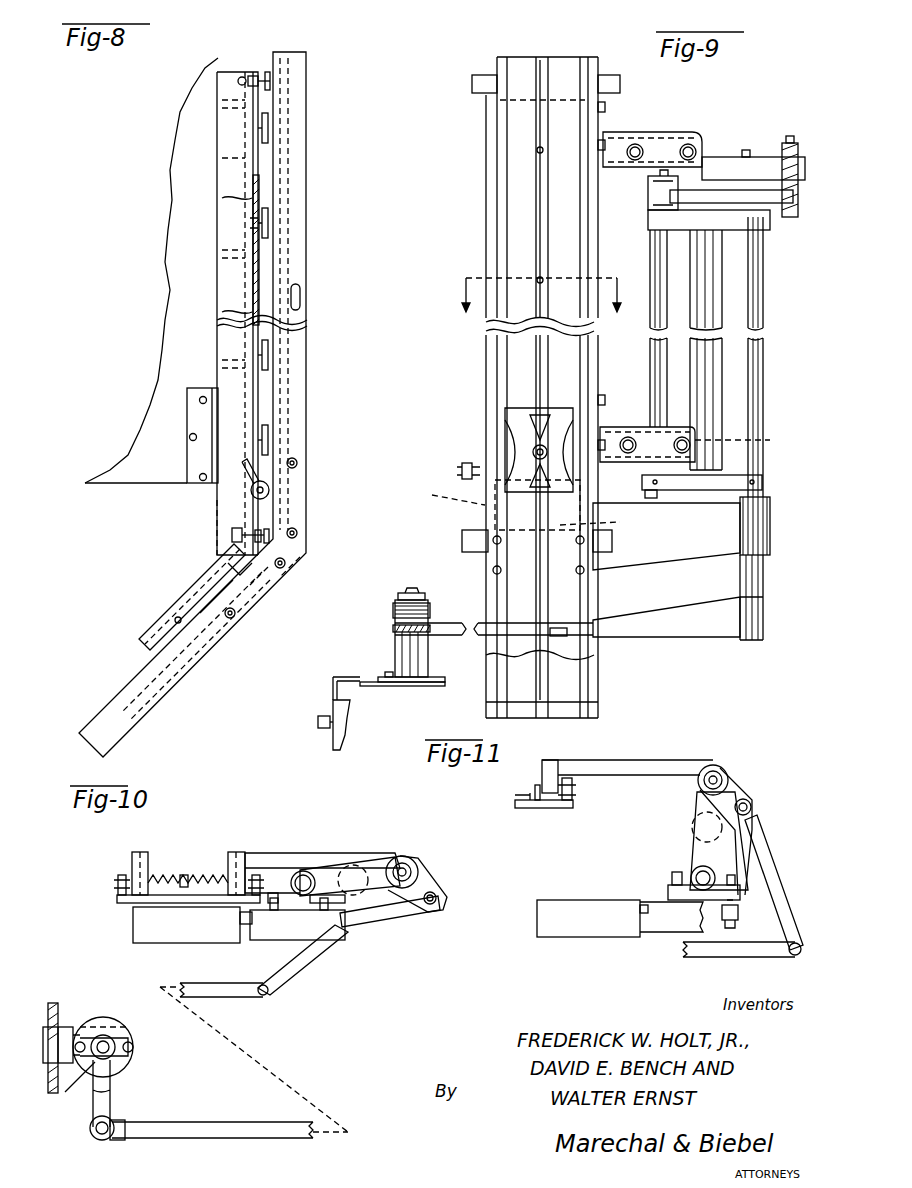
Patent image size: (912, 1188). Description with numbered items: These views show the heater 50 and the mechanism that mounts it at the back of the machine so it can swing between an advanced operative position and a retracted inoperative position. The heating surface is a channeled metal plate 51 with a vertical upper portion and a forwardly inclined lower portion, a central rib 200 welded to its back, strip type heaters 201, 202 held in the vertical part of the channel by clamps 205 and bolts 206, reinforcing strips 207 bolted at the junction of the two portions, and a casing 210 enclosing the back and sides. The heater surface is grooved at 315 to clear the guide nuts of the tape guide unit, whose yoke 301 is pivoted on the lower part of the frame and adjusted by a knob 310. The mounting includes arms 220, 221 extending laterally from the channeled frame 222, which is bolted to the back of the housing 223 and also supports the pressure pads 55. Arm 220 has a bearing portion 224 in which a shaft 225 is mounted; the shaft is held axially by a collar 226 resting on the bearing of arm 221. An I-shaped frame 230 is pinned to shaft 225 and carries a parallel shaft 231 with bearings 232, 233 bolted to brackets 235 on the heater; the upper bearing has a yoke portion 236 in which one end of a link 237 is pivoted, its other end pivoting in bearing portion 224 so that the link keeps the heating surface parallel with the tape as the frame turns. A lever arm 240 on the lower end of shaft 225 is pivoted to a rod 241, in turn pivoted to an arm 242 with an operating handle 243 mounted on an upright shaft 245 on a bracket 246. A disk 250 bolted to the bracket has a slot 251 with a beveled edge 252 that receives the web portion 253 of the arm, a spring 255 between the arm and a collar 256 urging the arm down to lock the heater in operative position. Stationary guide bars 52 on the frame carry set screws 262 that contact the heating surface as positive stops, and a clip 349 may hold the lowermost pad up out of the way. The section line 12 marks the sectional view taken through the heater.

In FIG. 9, the section line 12- 12 is at (543, 310).
In FIG. 8, the heater 50 is at (312, 170).
In FIG. 9, the heater 50 is at (520, 200).
In FIG. 10, the heater 50 is at (138, 930).
In FIG. 11, the heater 50 is at (568, 930).
In FIG. 8, the metal plate 51 is at (268, 275).
In FIG. 8, the stationary guide bars 52 is at (266, 74).
In FIG. 9, the stationary guide bars 52 is at (482, 76).
In FIG. 10, the stationary guide bars 52 is at (120, 902).
In FIG. 11, the stationary guide bars 52 is at (568, 810).
In FIG. 8, the pressure pads 55 is at (270, 132).
In FIG. 9, the central rib 200 is at (548, 57).
In FIG. 9, the strip type heater 201 is at (510, 230).
In FIG. 9, the strip type heater 202 is at (560, 263).
In FIG. 9, the clamps 205 is at (520, 412).
In FIG. 9, the bolts 206 is at (534, 450).
In FIG. 8, the reinforcing strips 207 is at (262, 588).
In FIG. 9, the reinforcing strips 207 is at (500, 598).
In FIG. 8, the casing 210 is at (298, 70).
In FIG. 9, the arm 220 is at (725, 157).
In FIG. 10, the arm 220 is at (268, 853).
In FIG. 11, the arm 220 is at (640, 760).
In FIG. 9, the arm 221 is at (735, 545).
In FIG. 8, the channeled frame 222 is at (228, 130).
In FIG. 10, the channeled frame 222 is at (132, 856).
In FIG. 11, the channeled frame 222 is at (548, 760).
In FIG. 8, the housing 223 is at (172, 182).
In FIG. 9, the bearing portion 224 is at (775, 158).
In FIG. 10, the bearing portion 224 is at (428, 880).
In FIG. 11, the bearing portion 224 is at (742, 795).
In FIG. 9, the shaft 225 is at (763, 350).
In FIG. 10, the shaft 225 is at (410, 862).
In FIG. 11, the shaft 225 is at (713, 770).
In FIG. 9, the collar 226 is at (765, 490).
In FIG. 9, the I-shaped frame 230 is at (715, 310).
In FIG. 10, the I-shaped frame 230 is at (350, 862).
In FIG. 11, the I-shaped frame 230 is at (697, 803).
In FIG. 9, the shaft 231 is at (655, 292).
In FIG. 11, the shaft 231 is at (700, 865).
In FIG. 9, the upper bearing 232 is at (665, 175).
In FIG. 10, the upper bearing 232 is at (300, 872).
In FIG. 11, the upper bearing 232 is at (668, 890).
In FIG. 9, the bearing 233 is at (773, 430).
In FIG. 9, the brackets 235 is at (618, 137).
In FIG. 10, the brackets 235 is at (298, 930).
In FIG. 11, the brackets 235 is at (660, 932).
In FIG. 9, the yoke portion 236 is at (672, 212).
In FIG. 11, the yoke portion 236 is at (740, 905).
In FIG. 9, the link 237 is at (730, 200).
In FIG. 10, the link 237 is at (400, 912).
In FIG. 11, the link 237 is at (755, 828).
In FIG. 9, the lever arm 240 is at (680, 628).
In FIG. 10, the lever arm 240 is at (300, 975).
In FIG. 11, the lever arm 240 is at (780, 935).
In FIG. 9, the rod 241 is at (458, 622).
In FIG. 10, the rod 241 is at (248, 998).
In FIG. 11, the rod 241 is at (712, 955).
In FIG. 9, the arm 242 is at (393, 628).
In FIG. 10, the arm 242 is at (110, 1108).
In FIG. 10, the operating handle 243 is at (110, 1132).
In FIG. 9, the upright shaft 245 is at (408, 590).
In FIG. 10, the upright shaft 245 is at (116, 1045).
In FIG. 9, the bracket 246 is at (330, 692).
In FIG. 10, the bracket 246 is at (66, 1027).
In FIG. 9, the disk 250 is at (430, 684).
In FIG. 10, the disk 250 is at (120, 1012).
In FIG. 9, the slot 251 is at (395, 688).
In FIG. 10, the slot 251 is at (95, 1065).
In FIG. 10, the beveled edge 252 is at (90, 1132).
In FIG. 9, the web portion 253 is at (395, 656).
In FIG. 10, the web portion 253 is at (110, 1080).
In FIG. 9, the spring 255 is at (393, 610).
In FIG. 9, the collar 256 is at (400, 594).
In FIG. 11, the set screws 262 is at (545, 810).
In FIG. 8, the yoke 301 is at (245, 478).
In FIG. 8, the knob 310 is at (268, 486).
In FIG. 9, the knob 310 is at (466, 463).
In FIG. 9, the groove 315 is at (529, 512).
In FIG. 8, the clip 349 is at (185, 625).